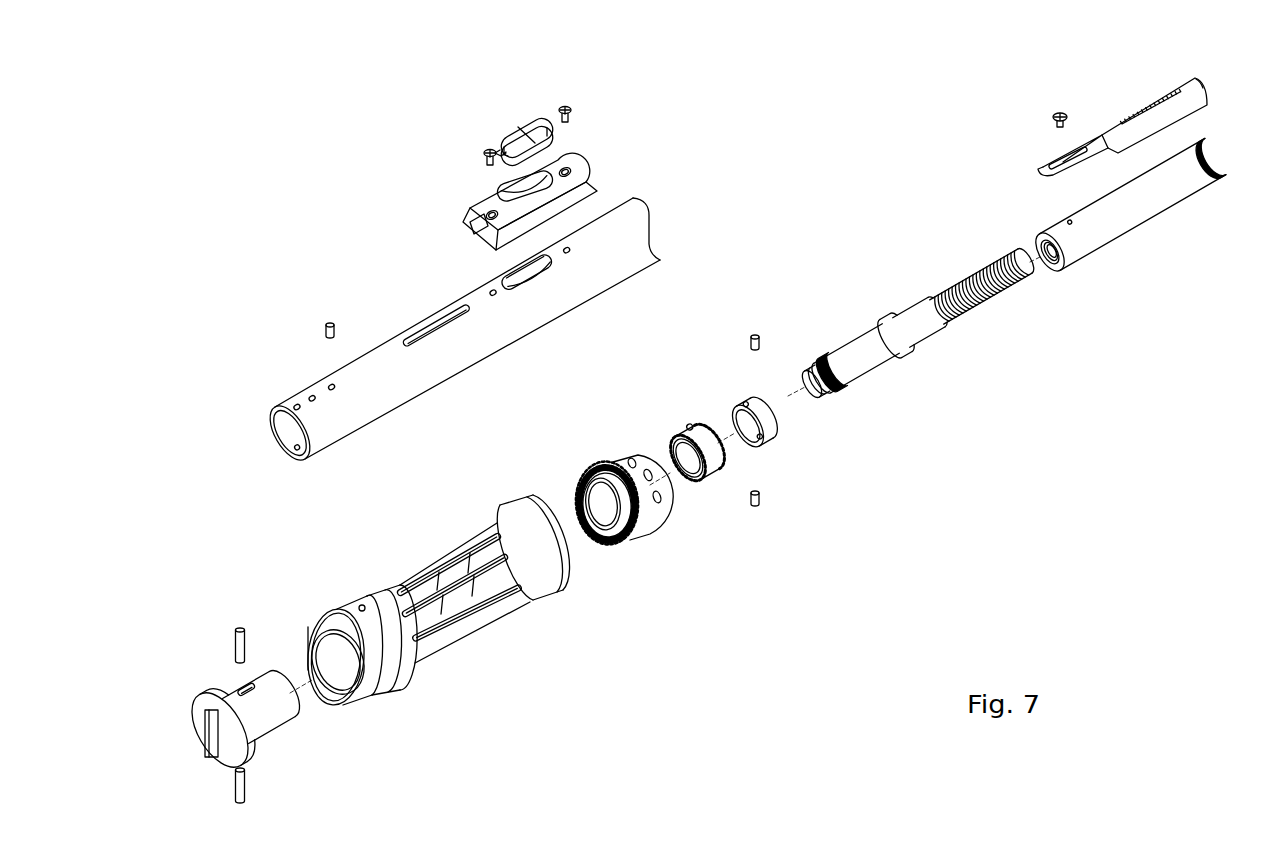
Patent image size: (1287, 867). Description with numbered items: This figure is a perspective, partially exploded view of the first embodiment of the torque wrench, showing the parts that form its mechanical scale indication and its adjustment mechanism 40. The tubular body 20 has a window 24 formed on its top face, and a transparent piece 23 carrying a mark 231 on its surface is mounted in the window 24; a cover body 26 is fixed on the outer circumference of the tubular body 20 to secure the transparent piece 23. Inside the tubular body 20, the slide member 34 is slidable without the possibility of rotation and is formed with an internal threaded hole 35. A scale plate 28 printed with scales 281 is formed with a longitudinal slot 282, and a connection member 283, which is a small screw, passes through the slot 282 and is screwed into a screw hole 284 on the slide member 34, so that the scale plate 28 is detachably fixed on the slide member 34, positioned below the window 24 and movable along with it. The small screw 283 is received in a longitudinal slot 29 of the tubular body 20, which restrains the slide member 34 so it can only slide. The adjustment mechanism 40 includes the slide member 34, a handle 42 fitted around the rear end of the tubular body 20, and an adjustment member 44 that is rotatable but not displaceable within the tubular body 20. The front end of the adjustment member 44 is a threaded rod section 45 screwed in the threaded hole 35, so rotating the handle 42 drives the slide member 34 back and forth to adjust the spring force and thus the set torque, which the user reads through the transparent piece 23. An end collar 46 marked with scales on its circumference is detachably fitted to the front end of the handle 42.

The tubular body 20 is at (470, 332).
The transparent piece 23 is at (491, 123).
The mark 231 is at (527, 122).
The window 24 is at (533, 285).
The cover body 26 is at (588, 175).
The scale plate 28 is at (1122, 127).
The scales 281 is at (1130, 113).
The longitudinal slot 282 is at (1048, 160).
The connection member 283 is at (1052, 120).
The screw hole 284 is at (1067, 215).
The longitudinal slot 29 is at (433, 318).
The slide member 34 is at (1080, 245).
The threaded hole 35 is at (1052, 262).
The adjustment mechanism 40 is at (849, 363).
The handle 42 is at (480, 647).
The adjustment member 44 is at (880, 377).
The threaded rod section 45 is at (963, 285).
The end collar 46 is at (655, 508).